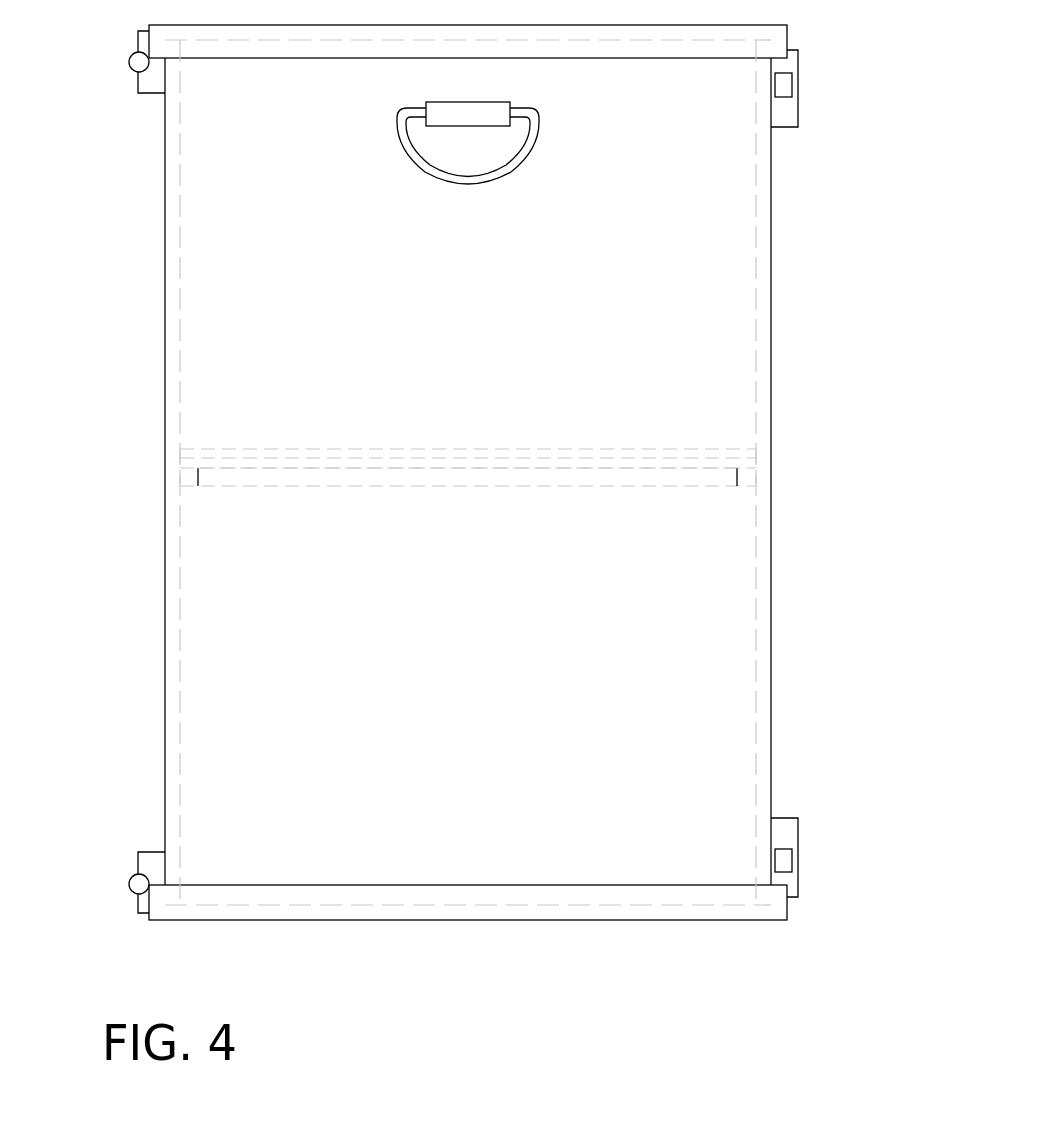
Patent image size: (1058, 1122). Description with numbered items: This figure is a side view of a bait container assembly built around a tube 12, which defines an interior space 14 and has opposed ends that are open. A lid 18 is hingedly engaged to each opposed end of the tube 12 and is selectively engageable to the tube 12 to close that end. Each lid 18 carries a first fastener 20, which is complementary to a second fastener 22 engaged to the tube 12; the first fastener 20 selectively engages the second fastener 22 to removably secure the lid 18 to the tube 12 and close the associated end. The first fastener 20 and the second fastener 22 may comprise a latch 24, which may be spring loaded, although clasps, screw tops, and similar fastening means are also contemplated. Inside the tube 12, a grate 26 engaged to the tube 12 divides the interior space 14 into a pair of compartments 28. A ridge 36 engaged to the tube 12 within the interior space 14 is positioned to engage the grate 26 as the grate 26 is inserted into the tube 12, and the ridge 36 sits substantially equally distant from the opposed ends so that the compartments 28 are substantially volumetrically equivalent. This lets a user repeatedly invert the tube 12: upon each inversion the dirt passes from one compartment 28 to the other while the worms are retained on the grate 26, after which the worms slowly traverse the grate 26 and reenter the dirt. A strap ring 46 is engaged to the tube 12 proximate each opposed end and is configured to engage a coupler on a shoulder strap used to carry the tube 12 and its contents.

The tube 12 is at (165, 198).
The interior space 14 is at (247, 267).
The lid 18 is at (317, 50).
The first fastener 20 is at (800, 45).
The second fastener 22 is at (798, 85).
The latch 24 is at (788, 832).
The grate 26 is at (203, 449).
The compartments 28 is at (653, 582).
The ridge 36 is at (183, 478).
The strap ring 46 is at (523, 160).